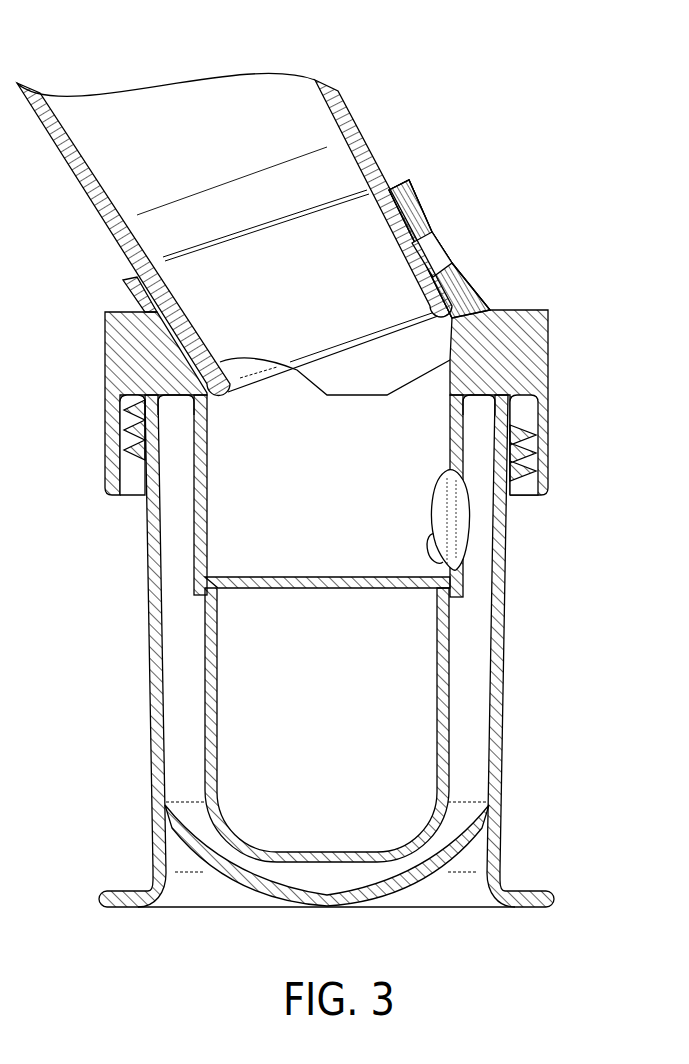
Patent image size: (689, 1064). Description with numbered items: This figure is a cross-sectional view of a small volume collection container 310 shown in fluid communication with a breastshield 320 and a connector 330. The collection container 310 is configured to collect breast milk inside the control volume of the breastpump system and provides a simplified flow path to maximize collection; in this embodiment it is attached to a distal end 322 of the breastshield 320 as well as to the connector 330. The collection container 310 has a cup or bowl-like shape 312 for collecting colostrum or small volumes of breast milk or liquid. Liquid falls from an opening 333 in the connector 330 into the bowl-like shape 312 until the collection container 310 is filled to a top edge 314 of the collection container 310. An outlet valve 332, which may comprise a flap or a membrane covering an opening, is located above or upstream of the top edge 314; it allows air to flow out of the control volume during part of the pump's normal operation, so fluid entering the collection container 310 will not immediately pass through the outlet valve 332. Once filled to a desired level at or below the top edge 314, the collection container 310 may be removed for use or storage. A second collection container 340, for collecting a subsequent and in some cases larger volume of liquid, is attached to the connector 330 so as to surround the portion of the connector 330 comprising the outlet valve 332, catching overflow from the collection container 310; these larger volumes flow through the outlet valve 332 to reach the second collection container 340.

The collection container 310 is at (412, 617).
The bowl-like shape 312 is at (430, 745).
The top edge 314 is at (338, 578).
The breastshield 320 is at (258, 90).
The distal end 322 is at (333, 355).
The connector 330 is at (487, 323).
The outlet valve 332 is at (467, 527).
The opening 333 is at (375, 363).
The second collection container 340 is at (168, 726).